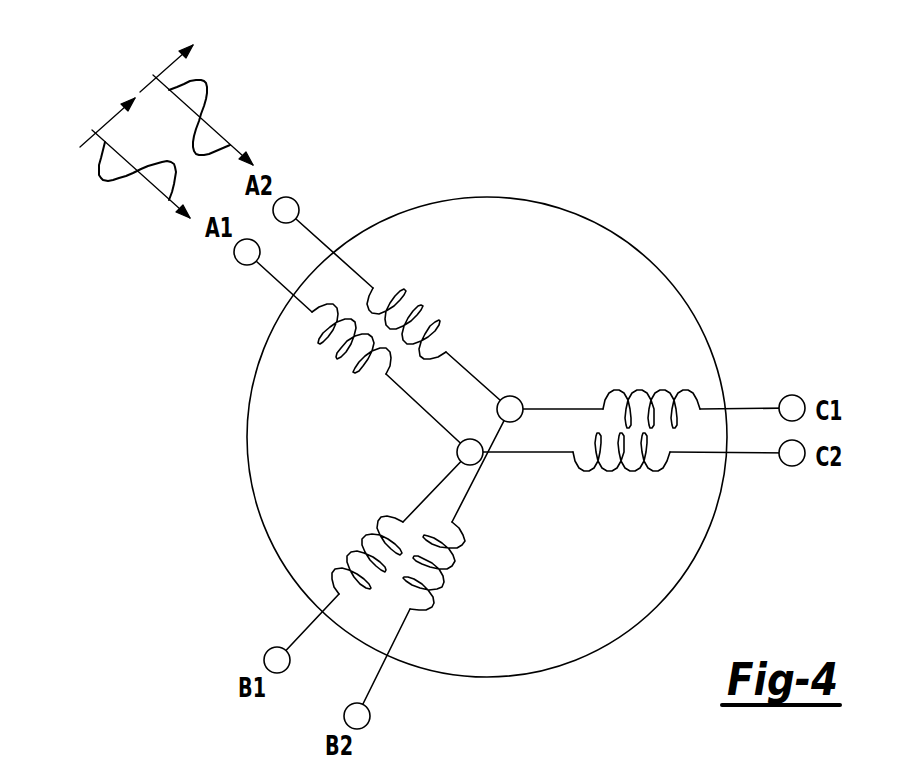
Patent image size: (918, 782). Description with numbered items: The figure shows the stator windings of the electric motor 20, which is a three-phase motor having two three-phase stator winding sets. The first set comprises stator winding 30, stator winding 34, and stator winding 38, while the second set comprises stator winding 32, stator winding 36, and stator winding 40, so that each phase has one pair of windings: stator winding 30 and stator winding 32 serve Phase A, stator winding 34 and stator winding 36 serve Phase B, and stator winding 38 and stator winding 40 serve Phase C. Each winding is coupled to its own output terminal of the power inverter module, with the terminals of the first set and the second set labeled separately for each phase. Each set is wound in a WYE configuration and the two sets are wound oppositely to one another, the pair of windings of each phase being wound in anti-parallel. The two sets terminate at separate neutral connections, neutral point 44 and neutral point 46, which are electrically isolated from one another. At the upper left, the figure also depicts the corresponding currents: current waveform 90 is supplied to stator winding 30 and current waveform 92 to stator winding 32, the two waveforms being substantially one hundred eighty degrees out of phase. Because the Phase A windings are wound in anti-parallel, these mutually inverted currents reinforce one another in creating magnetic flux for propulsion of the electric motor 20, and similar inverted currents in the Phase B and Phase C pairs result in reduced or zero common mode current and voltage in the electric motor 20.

The electric motor 20 is at (598, 222).
The stator winding 30 is at (340, 357).
The stator winding 32 is at (423, 307).
The stator winding 34 is at (347, 555).
The stator winding 36 is at (443, 587).
The stator winding 38 is at (640, 387).
The stator winding 40 is at (653, 473).
The neutral point 44 is at (458, 452).
The neutral point 46 is at (510, 396).
The current waveform 90 is at (103, 183).
The current waveform 92 is at (212, 81).